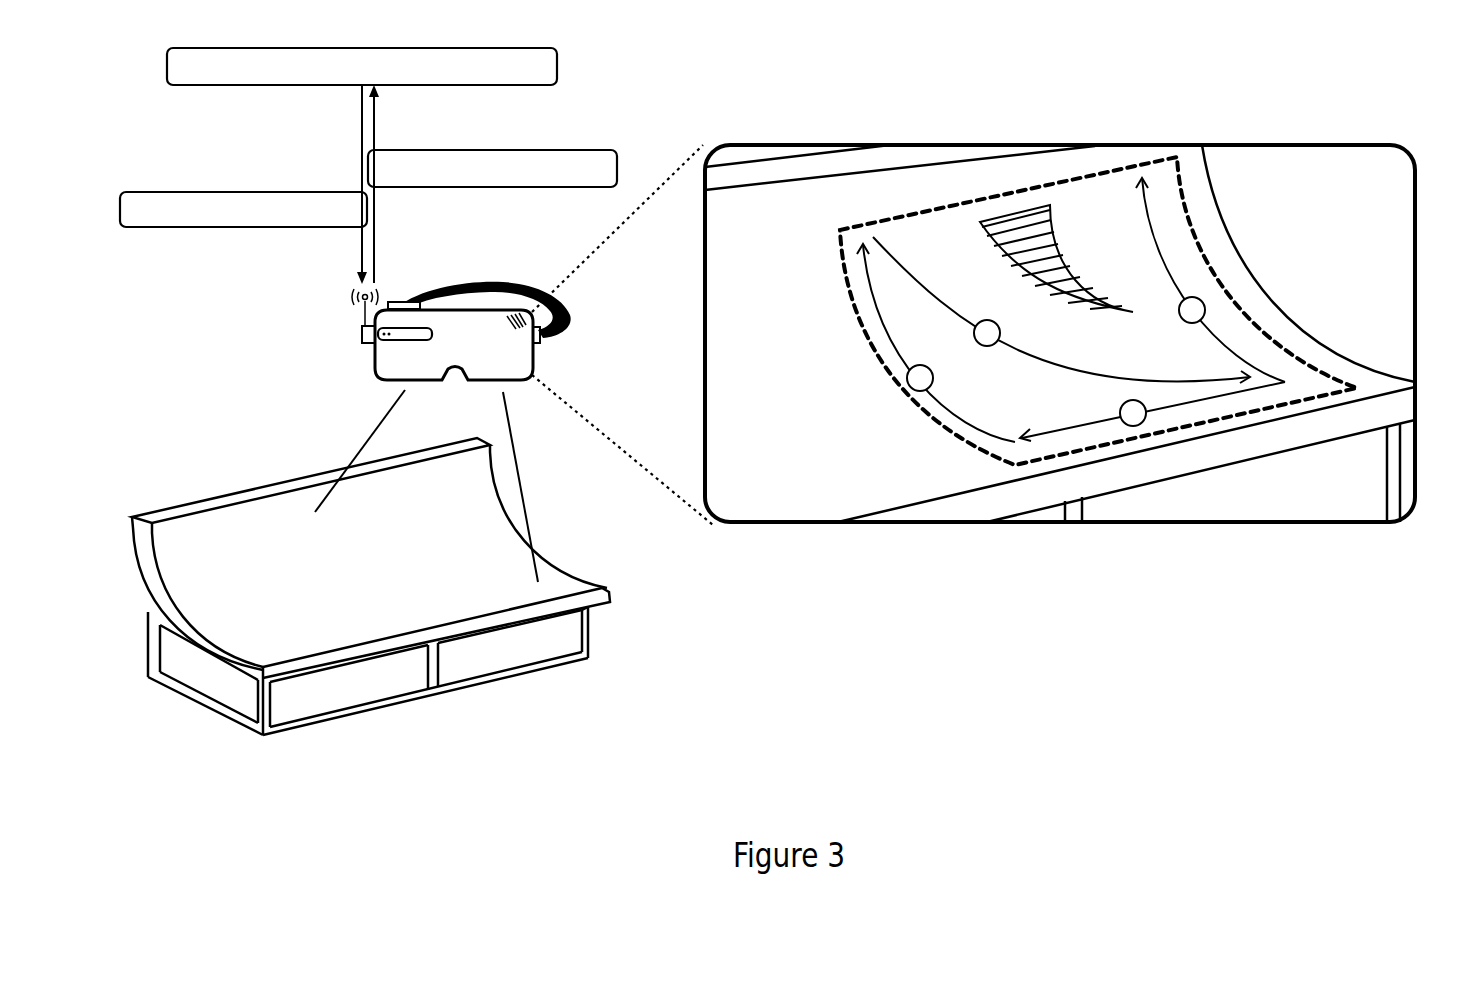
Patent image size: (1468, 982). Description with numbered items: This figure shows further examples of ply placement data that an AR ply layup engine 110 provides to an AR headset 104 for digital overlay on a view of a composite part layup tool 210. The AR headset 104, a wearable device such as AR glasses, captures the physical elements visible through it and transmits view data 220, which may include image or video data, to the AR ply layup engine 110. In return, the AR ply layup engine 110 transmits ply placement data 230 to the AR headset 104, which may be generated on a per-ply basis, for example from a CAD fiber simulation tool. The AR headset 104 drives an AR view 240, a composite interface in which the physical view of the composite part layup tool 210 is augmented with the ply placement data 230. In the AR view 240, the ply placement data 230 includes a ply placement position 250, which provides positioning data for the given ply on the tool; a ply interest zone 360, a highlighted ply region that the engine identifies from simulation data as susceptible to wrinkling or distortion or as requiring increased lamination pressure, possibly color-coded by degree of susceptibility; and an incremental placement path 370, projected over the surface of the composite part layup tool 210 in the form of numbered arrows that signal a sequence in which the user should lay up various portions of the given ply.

The AR ply layup engine 110 is at (362, 66).
The view data 220 is at (492, 168).
The ply placement data 230 is at (243, 209).
The AR headset 104 is at (390, 380).
The composite part layup tool 210 is at (485, 685).
The AR view 240 is at (763, 522).
The ply placement position 250 is at (861, 214).
The ply interest zone 360 is at (1014, 199).
The incremental placement path 370 is at (1167, 239).